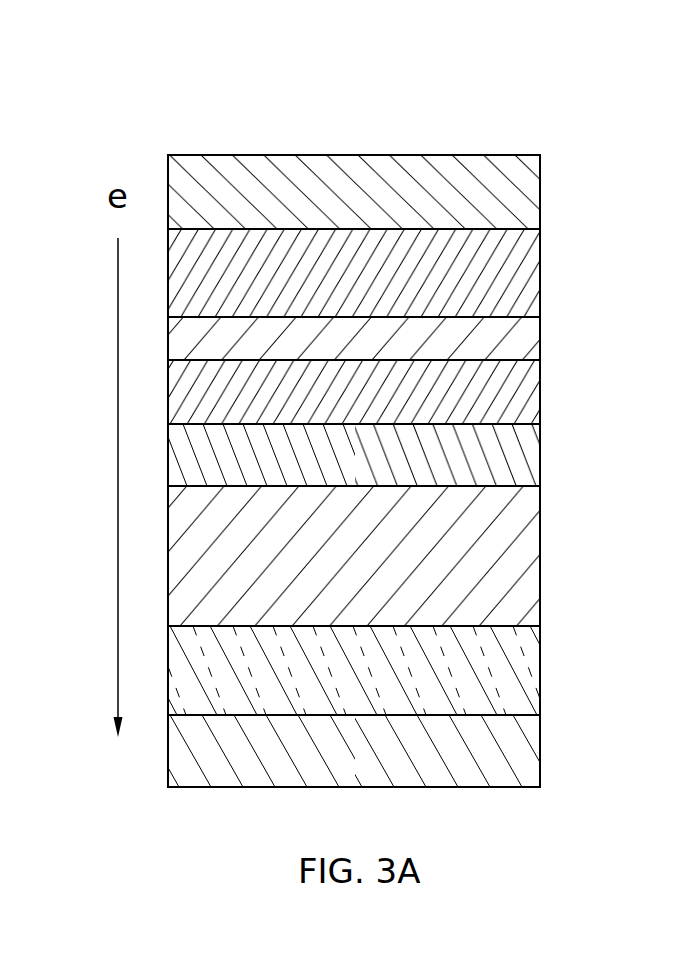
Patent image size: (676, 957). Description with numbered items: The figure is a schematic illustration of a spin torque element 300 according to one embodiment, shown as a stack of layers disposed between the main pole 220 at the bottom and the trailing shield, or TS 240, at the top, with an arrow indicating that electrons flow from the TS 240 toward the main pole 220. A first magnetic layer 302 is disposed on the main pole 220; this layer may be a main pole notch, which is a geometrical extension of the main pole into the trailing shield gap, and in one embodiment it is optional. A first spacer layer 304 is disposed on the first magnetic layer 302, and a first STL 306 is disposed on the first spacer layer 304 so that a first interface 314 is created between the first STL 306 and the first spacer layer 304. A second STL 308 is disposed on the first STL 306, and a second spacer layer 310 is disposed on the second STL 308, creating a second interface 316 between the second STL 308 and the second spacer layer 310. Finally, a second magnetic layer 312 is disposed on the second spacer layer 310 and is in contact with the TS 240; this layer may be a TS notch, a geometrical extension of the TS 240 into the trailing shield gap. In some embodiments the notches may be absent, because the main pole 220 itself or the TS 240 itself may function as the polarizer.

The spin torque element 300 is at (144, 63).
The trailing shield (TS) 240 is at (376, 207).
The second magnetic layer 312 is at (376, 289).
The second spacer layer 310 is at (376, 351).
The second STL 308 is at (376, 403).
The first STL 306 is at (376, 467).
The first spacer layer 304 is at (376, 568).
The first magnetic layer 302 is at (376, 683).
The main pole 220 is at (376, 763).
The second interface 316 is at (518, 349).
The first interface 314 is at (524, 497).